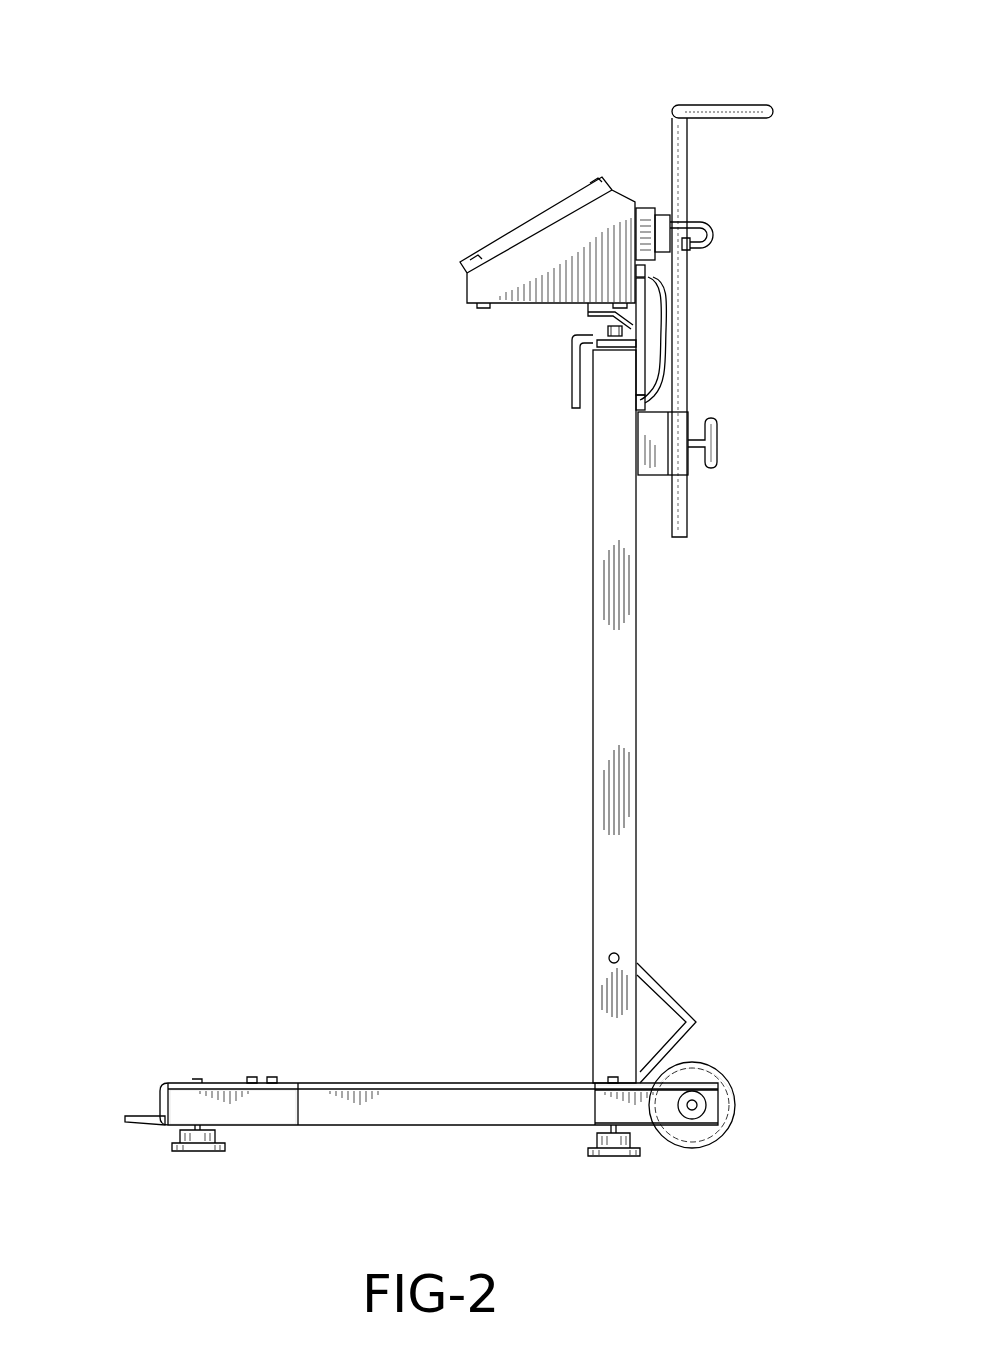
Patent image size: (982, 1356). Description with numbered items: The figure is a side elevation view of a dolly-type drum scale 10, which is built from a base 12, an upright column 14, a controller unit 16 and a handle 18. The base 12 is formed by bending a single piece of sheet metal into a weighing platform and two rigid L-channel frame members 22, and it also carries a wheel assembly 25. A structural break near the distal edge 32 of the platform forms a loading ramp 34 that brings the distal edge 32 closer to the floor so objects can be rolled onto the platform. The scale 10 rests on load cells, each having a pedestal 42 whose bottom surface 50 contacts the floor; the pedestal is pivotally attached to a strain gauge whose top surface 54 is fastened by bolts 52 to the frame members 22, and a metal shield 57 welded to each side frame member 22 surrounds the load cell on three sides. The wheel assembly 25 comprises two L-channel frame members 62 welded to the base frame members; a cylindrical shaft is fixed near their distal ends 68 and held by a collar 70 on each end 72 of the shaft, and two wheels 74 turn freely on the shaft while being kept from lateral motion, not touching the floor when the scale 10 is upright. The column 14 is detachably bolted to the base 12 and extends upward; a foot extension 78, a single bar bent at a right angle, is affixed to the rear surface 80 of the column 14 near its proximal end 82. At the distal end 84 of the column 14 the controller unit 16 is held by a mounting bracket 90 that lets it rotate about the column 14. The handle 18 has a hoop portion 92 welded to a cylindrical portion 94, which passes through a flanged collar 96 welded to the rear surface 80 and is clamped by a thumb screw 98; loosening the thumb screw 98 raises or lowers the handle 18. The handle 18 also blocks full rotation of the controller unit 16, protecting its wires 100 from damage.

The dolly-type drum scale 10 is at (485, 783).
The base 12 is at (355, 1080).
The column 14 is at (640, 645).
The controller unit 16 is at (502, 247).
The handle 18 is at (755, 268).
The rigid frame members 22 is at (400, 1083).
The wheel assembly 25 is at (733, 1083).
The distal edge 32 is at (128, 1119).
The loading ramp 34 is at (158, 1110).
The pedestal 42 is at (170, 1153).
The bottom surface 50 is at (200, 1152).
The bolts 52 is at (258, 1078).
The top surface 54 is at (207, 1084).
The metal shield 57 is at (278, 1115).
The L-channel frame members 62 is at (632, 1115).
The distal ends 68 is at (722, 1106).
The collar 70 is at (692, 1110).
The end 72 is at (692, 1107).
The wheels 74 is at (710, 1068).
The foot extension 78 is at (673, 992).
The rear surface 80 is at (593, 880).
The proximal end 82 is at (600, 1083).
The distal end 84 is at (612, 350).
The mounting bracket 90 is at (568, 402).
The hoop portion 92 is at (723, 118).
The cylindrical portion 94 is at (687, 180).
The flanged collar 96 is at (658, 463).
The thumb screw 98 is at (716, 445).
The wires 100 is at (663, 352).